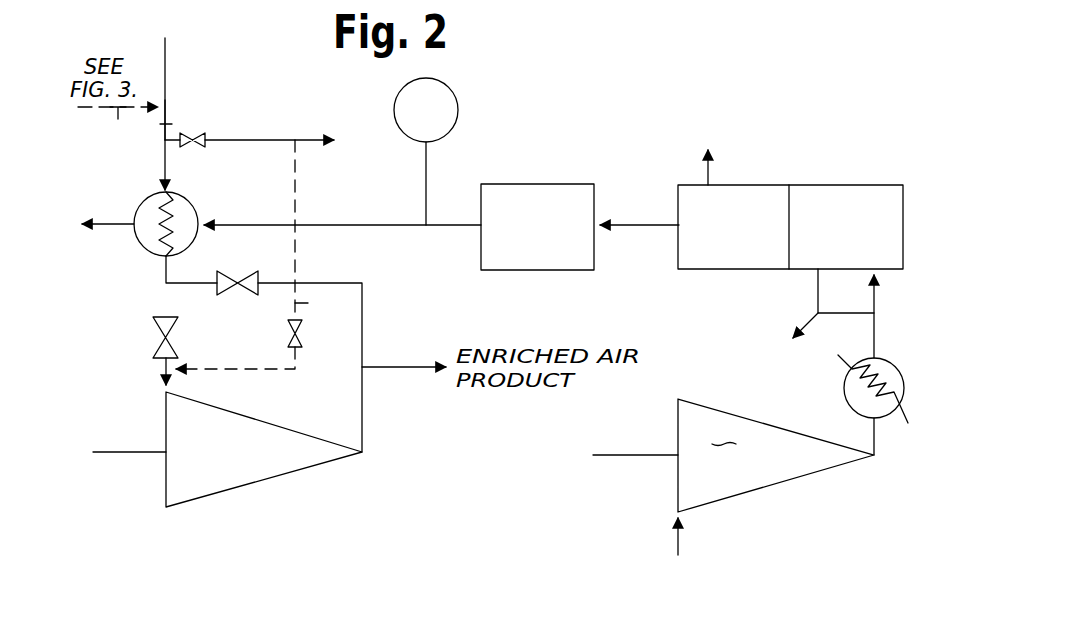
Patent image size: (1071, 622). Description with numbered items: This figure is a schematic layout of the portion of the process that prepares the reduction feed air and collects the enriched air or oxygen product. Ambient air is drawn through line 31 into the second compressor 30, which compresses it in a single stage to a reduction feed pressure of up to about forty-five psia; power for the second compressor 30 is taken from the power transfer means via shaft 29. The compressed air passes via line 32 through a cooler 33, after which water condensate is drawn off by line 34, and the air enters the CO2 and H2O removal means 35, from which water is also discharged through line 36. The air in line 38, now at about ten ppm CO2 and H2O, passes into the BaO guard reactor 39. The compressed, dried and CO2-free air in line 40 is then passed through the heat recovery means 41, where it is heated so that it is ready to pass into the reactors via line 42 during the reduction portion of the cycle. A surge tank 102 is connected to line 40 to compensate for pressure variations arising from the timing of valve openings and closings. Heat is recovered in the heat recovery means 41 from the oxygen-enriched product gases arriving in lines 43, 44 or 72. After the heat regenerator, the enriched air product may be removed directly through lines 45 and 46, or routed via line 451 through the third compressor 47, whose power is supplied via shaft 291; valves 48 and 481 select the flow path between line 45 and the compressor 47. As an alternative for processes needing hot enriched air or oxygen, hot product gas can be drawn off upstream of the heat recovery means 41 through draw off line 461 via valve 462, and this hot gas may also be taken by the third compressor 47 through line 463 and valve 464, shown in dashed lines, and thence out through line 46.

The shaft 29 is at (610, 453).
The second compressor 30 is at (760, 424).
The line 31 is at (688, 524).
The line 32 is at (876, 460).
The cooler 33 is at (900, 378).
The line 34 is at (848, 313).
The CO2 and H2O removal means 35 is at (748, 185).
The water discharge line 36 is at (815, 291).
The line 38 is at (630, 224).
The BaO guard reactor 39 is at (523, 184).
The line 40 is at (256, 223).
The heat recovery means 41 is at (196, 212).
The line 42 is at (112, 222).
The line 43 is at (167, 124).
The line 44 is at (130, 127).
The line 45 is at (306, 283).
The line 46 is at (388, 365).
The third compressor 47 is at (268, 426).
The valve 48 is at (176, 334).
The line 72 is at (168, 56).
The surge tank 102 is at (458, 95).
The shaft 291 is at (118, 450).
The line 451 is at (158, 369).
The draw off line 461 is at (252, 138).
The valve 462 is at (190, 148).
The line 463 is at (324, 230).
The valve 464 is at (303, 342).
The valve 481 is at (236, 270).